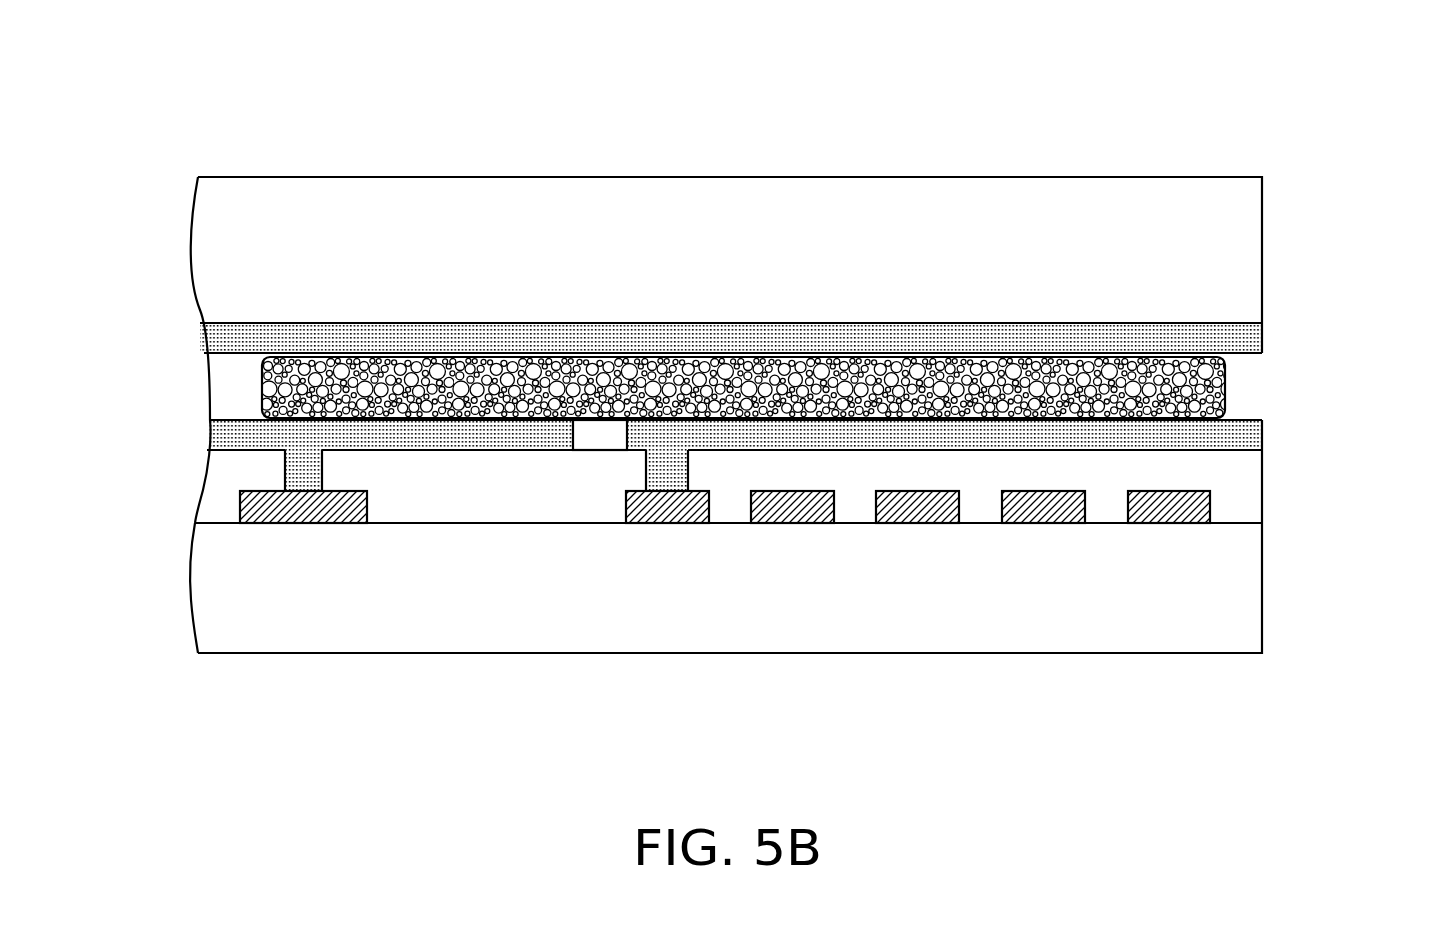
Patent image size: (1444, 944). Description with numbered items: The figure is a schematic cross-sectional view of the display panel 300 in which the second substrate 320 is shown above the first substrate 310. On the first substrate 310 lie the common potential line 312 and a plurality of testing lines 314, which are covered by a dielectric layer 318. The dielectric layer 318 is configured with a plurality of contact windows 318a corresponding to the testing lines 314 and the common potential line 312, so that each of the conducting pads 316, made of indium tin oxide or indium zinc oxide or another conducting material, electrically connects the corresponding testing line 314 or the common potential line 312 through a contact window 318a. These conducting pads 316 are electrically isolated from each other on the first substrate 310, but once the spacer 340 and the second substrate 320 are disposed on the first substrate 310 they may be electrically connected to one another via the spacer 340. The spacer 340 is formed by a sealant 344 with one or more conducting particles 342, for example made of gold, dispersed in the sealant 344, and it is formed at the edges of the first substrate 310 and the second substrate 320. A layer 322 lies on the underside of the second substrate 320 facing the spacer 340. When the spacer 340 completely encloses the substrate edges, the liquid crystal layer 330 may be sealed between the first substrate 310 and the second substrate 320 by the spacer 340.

The display device / bonding structure 300 is at (1423, 782).
The first substrate 310 is at (1233, 598).
The common potential line 312 is at (308, 523).
The testing lines 314 is at (668, 523).
The conducting pads 316 is at (228, 432).
The dielectric layer 318 is at (1233, 482).
The contact windows 318a is at (303, 485).
The second substrate 320 is at (1233, 237).
The conductive electrode layer 322 is at (1233, 337).
The liquid crystal layer 330 is at (227, 380).
The spacer 340 is at (443, 207).
The conducting particles 342 is at (502, 350).
The sealant 344 is at (388, 350).